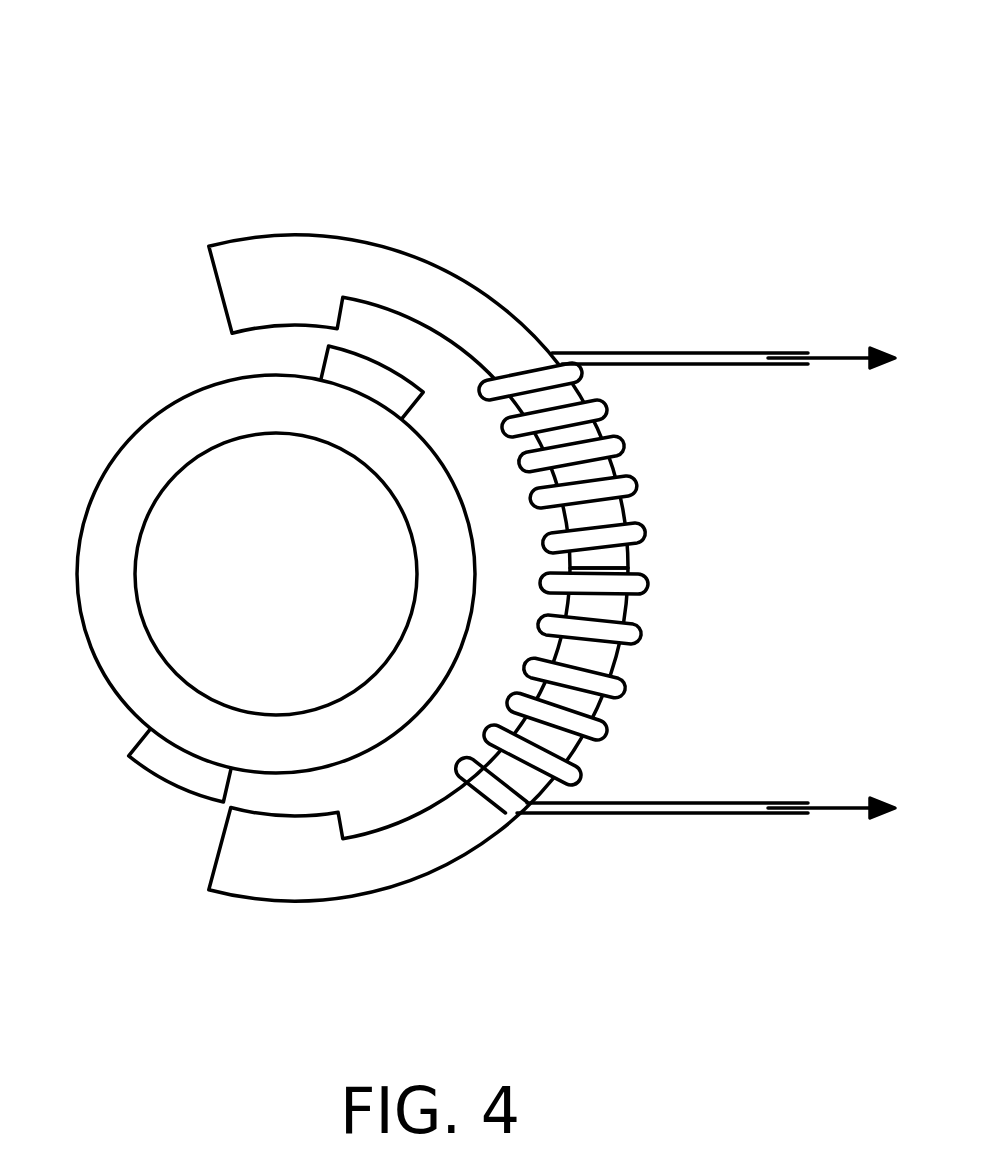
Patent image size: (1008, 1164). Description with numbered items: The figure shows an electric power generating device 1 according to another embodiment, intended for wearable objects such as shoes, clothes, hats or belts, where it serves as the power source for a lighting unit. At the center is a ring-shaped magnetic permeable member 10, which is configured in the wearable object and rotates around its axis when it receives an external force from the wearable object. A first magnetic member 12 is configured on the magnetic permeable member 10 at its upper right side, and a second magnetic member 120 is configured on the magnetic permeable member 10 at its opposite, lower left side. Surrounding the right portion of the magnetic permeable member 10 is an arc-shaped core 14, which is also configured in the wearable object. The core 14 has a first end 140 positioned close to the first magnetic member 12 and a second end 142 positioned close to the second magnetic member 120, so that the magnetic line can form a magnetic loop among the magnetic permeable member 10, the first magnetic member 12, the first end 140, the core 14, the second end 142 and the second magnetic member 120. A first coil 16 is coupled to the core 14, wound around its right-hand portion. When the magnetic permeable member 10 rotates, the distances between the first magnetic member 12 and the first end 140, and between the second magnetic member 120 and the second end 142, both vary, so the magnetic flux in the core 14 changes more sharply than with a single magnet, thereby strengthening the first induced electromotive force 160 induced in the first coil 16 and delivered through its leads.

The electric power generating device 1 is at (300, 132).
The magnetic permeable member 10 is at (78, 540).
The first magnetic member 12 is at (410, 413).
The second magnetic member 120 is at (138, 740).
The core 14 is at (447, 270).
The first end 140 is at (224, 325).
The second end 142 is at (333, 818).
The first coil 16 is at (643, 483).
The first induced electromotive force 160 is at (847, 364).